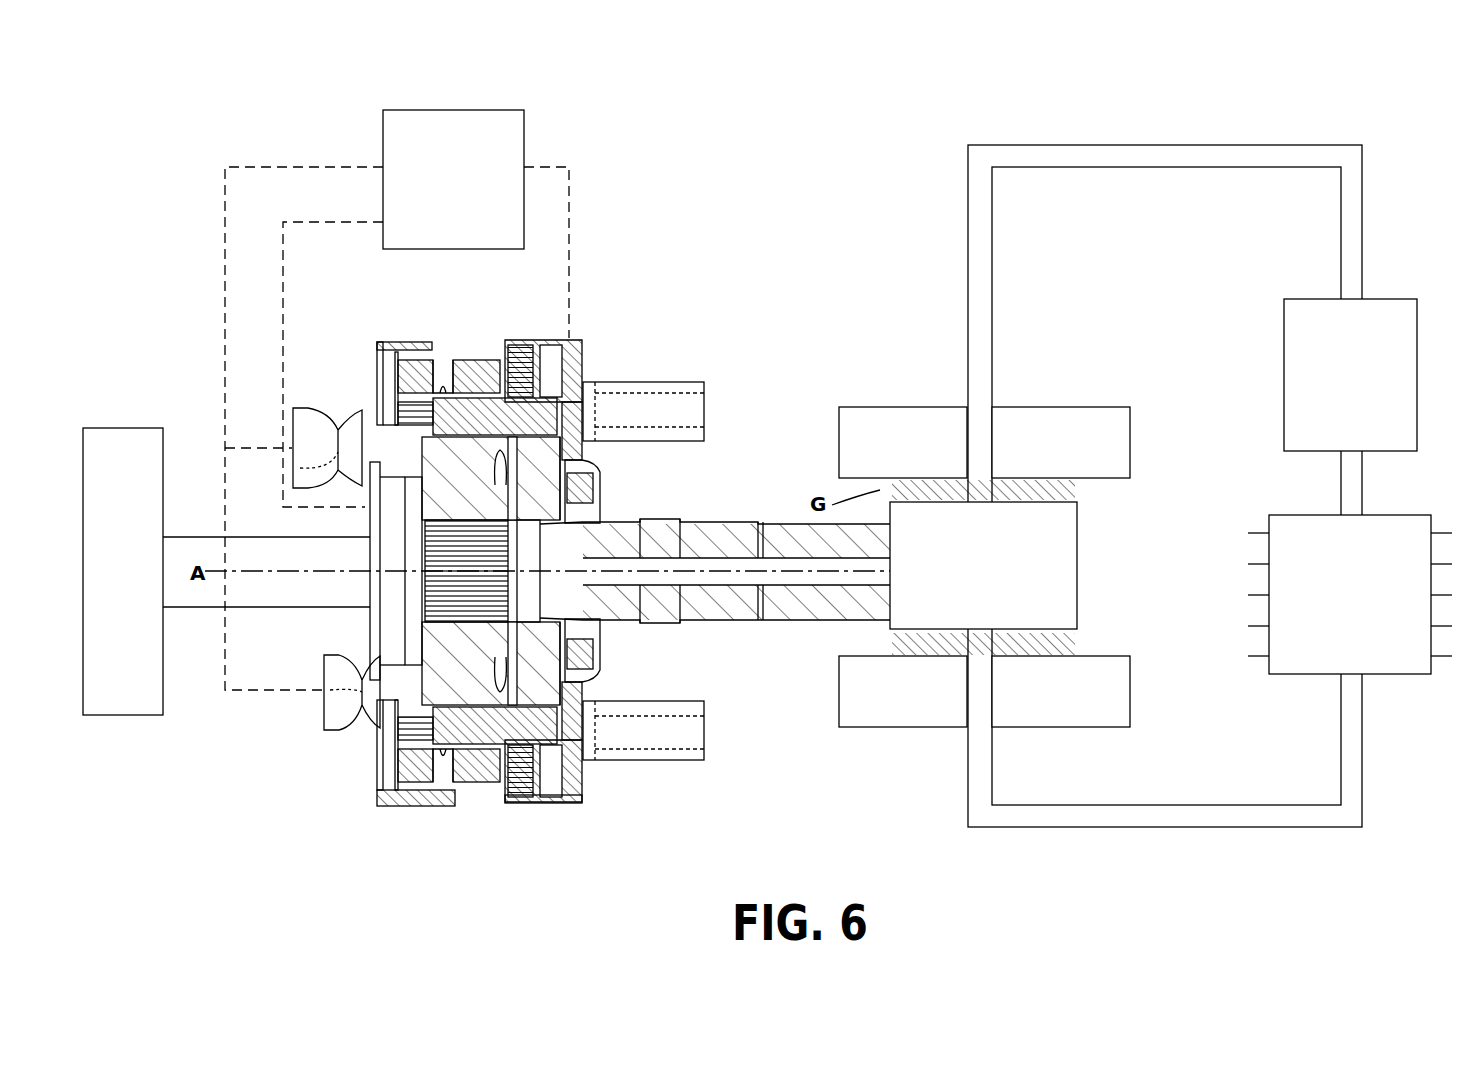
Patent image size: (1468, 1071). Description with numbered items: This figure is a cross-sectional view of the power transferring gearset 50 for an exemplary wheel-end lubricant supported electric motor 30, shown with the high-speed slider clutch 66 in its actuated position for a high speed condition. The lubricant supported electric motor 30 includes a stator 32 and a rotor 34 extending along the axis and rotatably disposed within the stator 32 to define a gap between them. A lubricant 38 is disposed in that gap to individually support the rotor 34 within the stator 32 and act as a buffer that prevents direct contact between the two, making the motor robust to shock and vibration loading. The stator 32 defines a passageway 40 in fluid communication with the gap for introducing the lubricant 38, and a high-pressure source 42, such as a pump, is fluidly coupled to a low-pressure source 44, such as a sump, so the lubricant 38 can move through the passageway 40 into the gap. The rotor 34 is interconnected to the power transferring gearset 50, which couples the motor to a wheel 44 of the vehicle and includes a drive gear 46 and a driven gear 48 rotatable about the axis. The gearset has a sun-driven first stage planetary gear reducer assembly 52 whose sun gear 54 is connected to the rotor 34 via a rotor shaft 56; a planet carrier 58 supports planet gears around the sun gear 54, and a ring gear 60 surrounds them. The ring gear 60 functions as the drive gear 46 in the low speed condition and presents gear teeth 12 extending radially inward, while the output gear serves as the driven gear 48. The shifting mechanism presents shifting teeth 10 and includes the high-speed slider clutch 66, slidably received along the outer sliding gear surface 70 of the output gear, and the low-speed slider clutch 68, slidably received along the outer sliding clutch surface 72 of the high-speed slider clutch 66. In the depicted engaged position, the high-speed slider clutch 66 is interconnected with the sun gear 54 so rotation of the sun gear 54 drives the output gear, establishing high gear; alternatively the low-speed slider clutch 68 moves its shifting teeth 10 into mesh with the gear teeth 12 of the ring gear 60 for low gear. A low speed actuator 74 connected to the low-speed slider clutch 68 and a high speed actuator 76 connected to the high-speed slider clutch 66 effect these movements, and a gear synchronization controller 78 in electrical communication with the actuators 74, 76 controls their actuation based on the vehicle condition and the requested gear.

The shifting teeth 10 is at (480, 360).
The gear teeth 12 is at (525, 345).
The lubricant supported electric motor 30 is at (1236, 98).
The stator 32 is at (1097, 407).
The rotor 34 is at (905, 608).
The lubricant 38 is at (1078, 486).
The passageway 40 is at (993, 440).
The high-pressure source 42 is at (1315, 299).
The low-pressure source 44 is at (122, 428).
The drive gear 46 is at (562, 340).
The driven gear 48 is at (369, 622).
The power transferring gearset 50 is at (620, 320).
The first stage planetary gear reducer assembly 52 is at (548, 812).
The sun gear 54 is at (600, 656).
The rotor shaft 56 is at (722, 622).
The planet carrier 58 is at (645, 737).
The ring gear 60 is at (541, 807).
The high-speed slider clutch 66 is at (478, 724).
The low-speed slider clutch 68 is at (410, 775).
The outer sliding gear surface 70 is at (472, 398).
The outer sliding clutch surface 72 is at (440, 395).
The low speed actuator 74 is at (292, 432).
The high speed actuator 76 is at (320, 716).
The gear synchronization controller 78 is at (462, 110).